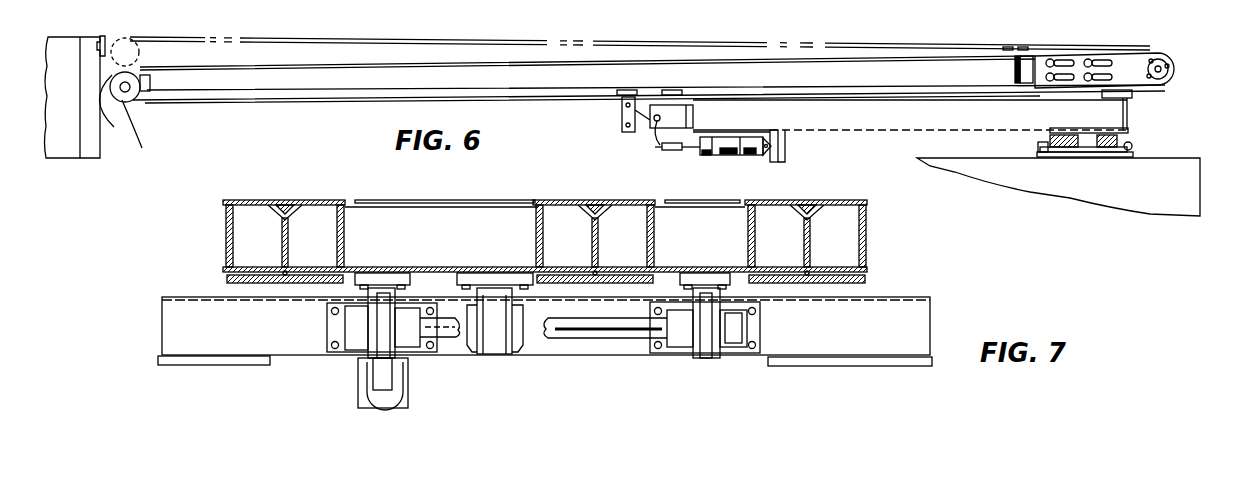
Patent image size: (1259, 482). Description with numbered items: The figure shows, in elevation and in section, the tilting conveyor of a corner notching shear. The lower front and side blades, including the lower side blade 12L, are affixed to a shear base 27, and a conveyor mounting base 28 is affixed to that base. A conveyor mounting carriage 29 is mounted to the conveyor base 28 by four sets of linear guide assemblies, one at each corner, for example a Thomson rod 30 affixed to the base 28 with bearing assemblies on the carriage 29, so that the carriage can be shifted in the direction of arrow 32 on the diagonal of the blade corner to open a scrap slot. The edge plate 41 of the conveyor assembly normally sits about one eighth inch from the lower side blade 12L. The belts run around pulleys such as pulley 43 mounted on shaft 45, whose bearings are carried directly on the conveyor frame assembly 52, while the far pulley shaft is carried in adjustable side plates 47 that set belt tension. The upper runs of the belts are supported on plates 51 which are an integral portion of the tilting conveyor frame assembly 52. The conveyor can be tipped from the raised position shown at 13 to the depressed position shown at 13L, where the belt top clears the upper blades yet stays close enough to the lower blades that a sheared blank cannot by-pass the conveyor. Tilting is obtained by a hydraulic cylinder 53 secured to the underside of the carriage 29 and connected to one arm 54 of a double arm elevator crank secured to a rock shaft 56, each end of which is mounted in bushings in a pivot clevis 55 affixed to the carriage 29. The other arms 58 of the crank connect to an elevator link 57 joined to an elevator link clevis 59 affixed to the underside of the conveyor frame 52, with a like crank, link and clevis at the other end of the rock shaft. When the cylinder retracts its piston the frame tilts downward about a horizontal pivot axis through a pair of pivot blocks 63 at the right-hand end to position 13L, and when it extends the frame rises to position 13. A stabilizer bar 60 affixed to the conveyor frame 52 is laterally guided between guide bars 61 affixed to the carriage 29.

In FIG. 6, the lower side blade 12L is at (99, 40).
In FIG. 6, the conveyor assembly 13 is at (316, 32).
In FIG. 6, the conveyor depressed position 13L is at (252, 106).
In FIG. 6, the shear base 27 is at (60, 148).
In FIG. 6, the conveyor mounting base 28 is at (1118, 190).
In FIG. 6, the conveyor mounting carriage 29 is at (855, 120).
In FIG. 7, the conveyor mounting carriage 29 is at (912, 327).
In FIG. 6, the Thomson rod 30 is at (1137, 146).
In FIG. 6, the direction of carriage shifting 32 is at (1106, 6).
In FIG. 6, the edge plate 41 is at (118, 109).
In FIG. 6, the pulley 43 is at (130, 96).
In FIG. 6, the shaft 45 is at (142, 134).
In FIG. 6, the side plate 47 is at (1128, 62).
In FIG. 7, the support plate 51 is at (312, 200).
In FIG. 6, the conveyor frame assembly 52 is at (507, 80).
In FIG. 7, the conveyor frame assembly 52 is at (433, 217).
In FIG. 6, the hydraulic cylinder 53 is at (733, 157).
In FIG. 6, the crank arm 54 is at (663, 122).
In FIG. 7, the crank arm 54 is at (384, 378).
In FIG. 6, the pivot clevis 55 is at (678, 117).
In FIG. 7, the pivot clevis 55 is at (352, 320).
In FIG. 6, the rock shaft 56 is at (648, 132).
In FIG. 7, the rock shaft 56 is at (567, 338).
In FIG. 6, the elevator link 57 is at (623, 120).
In FIG. 7, the elevator link 57 is at (372, 323).
In FIG. 6, the crank arm 58 is at (646, 131).
In FIG. 7, the crank arm 58 is at (380, 332).
In FIG. 6, the elevator link clevis 59 is at (620, 98).
In FIG. 7, the elevator link clevis 59 is at (382, 290).
In FIG. 7, the stabilizer bar 60 is at (492, 343).
In FIG. 7, the guide bar 61 is at (470, 352).
In FIG. 6, the pivot block 63 is at (1130, 95).